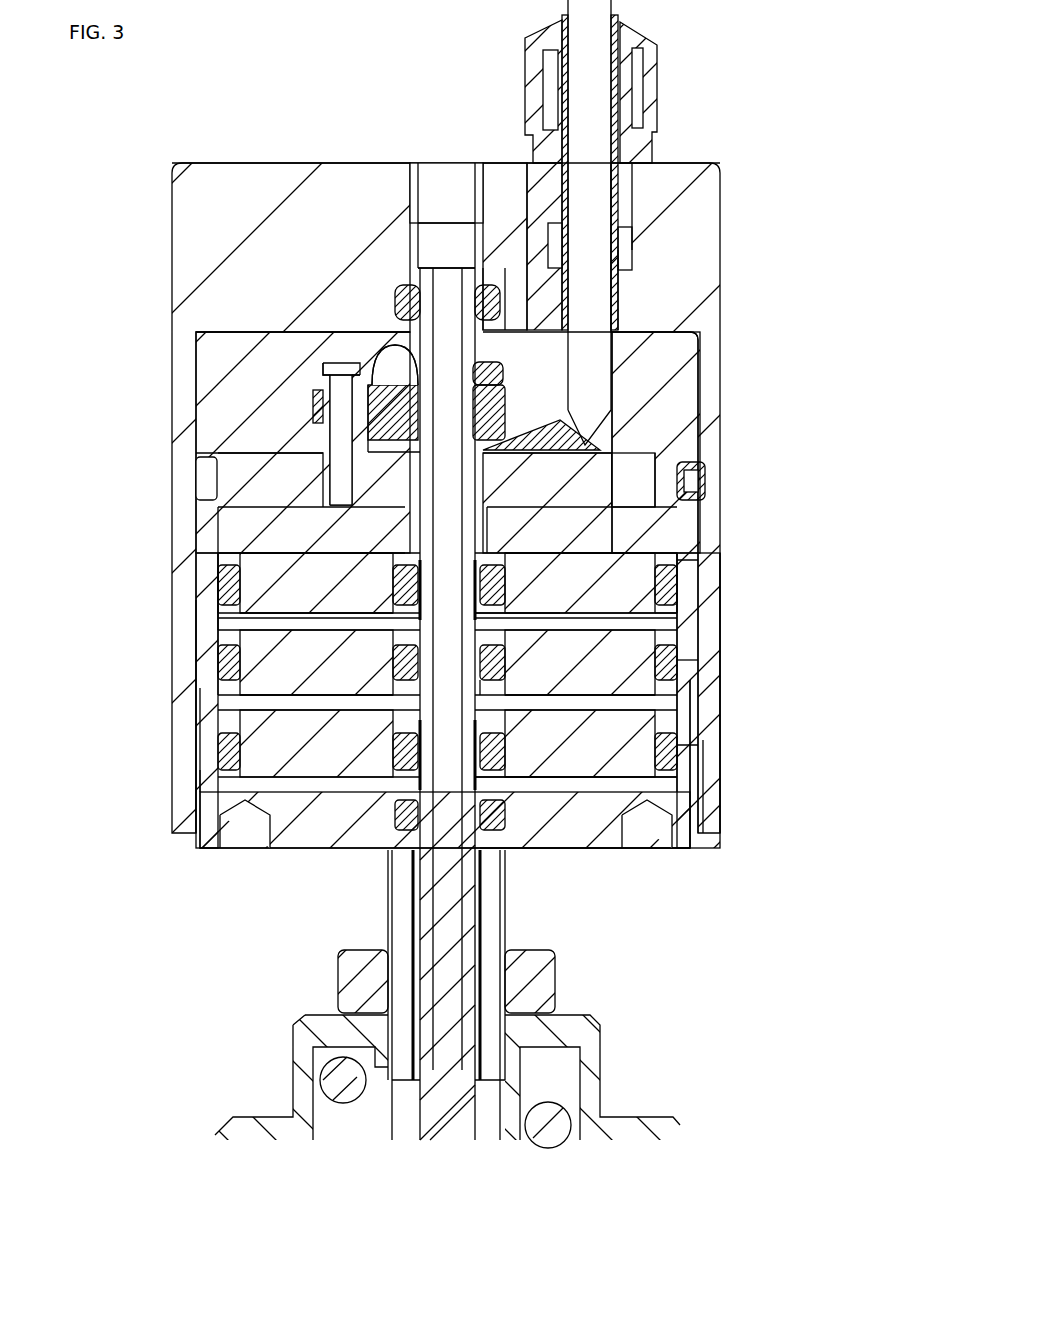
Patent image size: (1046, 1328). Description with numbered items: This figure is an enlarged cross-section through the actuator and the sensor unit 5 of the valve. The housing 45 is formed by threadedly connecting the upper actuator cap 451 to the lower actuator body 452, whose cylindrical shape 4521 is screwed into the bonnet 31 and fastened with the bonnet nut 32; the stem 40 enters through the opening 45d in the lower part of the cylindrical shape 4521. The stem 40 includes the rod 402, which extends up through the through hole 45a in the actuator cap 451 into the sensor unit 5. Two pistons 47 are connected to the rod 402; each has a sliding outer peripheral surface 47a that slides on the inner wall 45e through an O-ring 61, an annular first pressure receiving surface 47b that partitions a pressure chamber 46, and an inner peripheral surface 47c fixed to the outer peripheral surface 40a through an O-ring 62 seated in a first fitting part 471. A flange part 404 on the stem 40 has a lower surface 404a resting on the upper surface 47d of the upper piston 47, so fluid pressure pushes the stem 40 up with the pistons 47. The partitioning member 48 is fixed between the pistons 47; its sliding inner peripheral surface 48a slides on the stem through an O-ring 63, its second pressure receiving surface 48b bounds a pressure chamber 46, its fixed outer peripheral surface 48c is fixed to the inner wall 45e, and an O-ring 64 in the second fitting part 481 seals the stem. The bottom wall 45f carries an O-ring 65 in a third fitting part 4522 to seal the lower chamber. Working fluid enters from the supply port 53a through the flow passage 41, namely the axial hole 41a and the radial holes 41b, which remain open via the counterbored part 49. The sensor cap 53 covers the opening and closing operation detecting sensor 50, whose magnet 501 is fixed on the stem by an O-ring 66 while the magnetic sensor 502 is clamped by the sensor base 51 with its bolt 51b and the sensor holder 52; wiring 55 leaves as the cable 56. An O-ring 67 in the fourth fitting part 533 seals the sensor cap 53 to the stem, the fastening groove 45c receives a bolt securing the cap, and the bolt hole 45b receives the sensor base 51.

The sensor unit 5 is at (722, 192).
The sensor cap 53 is at (720, 225).
The supply port 53a is at (440, 163).
The fourth fitting part 533 is at (505, 300).
The cable 56 is at (611, 285).
The O-ring 66 is at (640, 300).
The wiring 55 is at (505, 395).
The flow passage 41 is at (432, 339).
The axial hole 41a is at (418, 268).
The radial holes 41b is at (420, 600).
The O-ring 67 is at (490, 290).
The sensor holder 52 is at (385, 350).
The housing 45 is at (720, 542).
The through hole 45a is at (695, 462).
The bolt hole 45b is at (300, 455).
The fastening groove 45c is at (200, 465).
The opening 45d is at (480, 1090).
The inner wall 45e is at (722, 545).
The bottom wall 45f is at (600, 850).
The actuator cap 451 is at (700, 575).
The actuator body 452 is at (692, 830).
The cylindrical shape 4521 is at (505, 920).
The third fitting part 4522 is at (480, 860).
The piston 47 is at (222, 575).
The sliding outer peripheral surface 47a is at (218, 585).
The first pressure receiving surface 47b is at (680, 630).
The inner peripheral surface 47c is at (520, 580).
The upper surface 47d is at (218, 560).
The first fitting part 471 is at (500, 613).
The partitioning member 48 is at (218, 690).
The sliding inner peripheral surface 48a is at (395, 690).
The second pressure receiving surface 48b is at (300, 613).
The fixed outer peripheral surface 48c is at (218, 622).
The second fitting part 481 is at (390, 651).
The pressure chamber 46 is at (218, 610).
The counterbored part 49 is at (560, 645).
The O-ring 61 is at (690, 590).
The O-ring 62 is at (505, 660).
The O-ring 63 is at (690, 670).
The O-ring 64 is at (482, 688).
The O-ring 65 is at (378, 850).
The stem 40 is at (420, 905).
The rod 402 is at (433, 905).
The outer peripheral surface 40a is at (400, 553).
The flange part 404 is at (490, 525).
The lower surface 404a is at (560, 553).
The opening and closing operation detecting sensor 50 is at (630, 355).
The magnet 501 is at (612, 360).
The magnetic sensor 502 is at (372, 345).
The sensor base 51 is at (318, 400).
The bolt 51b is at (325, 370).
The bonnet nut 32 is at (556, 975).
The bonnet 31 is at (295, 1040).